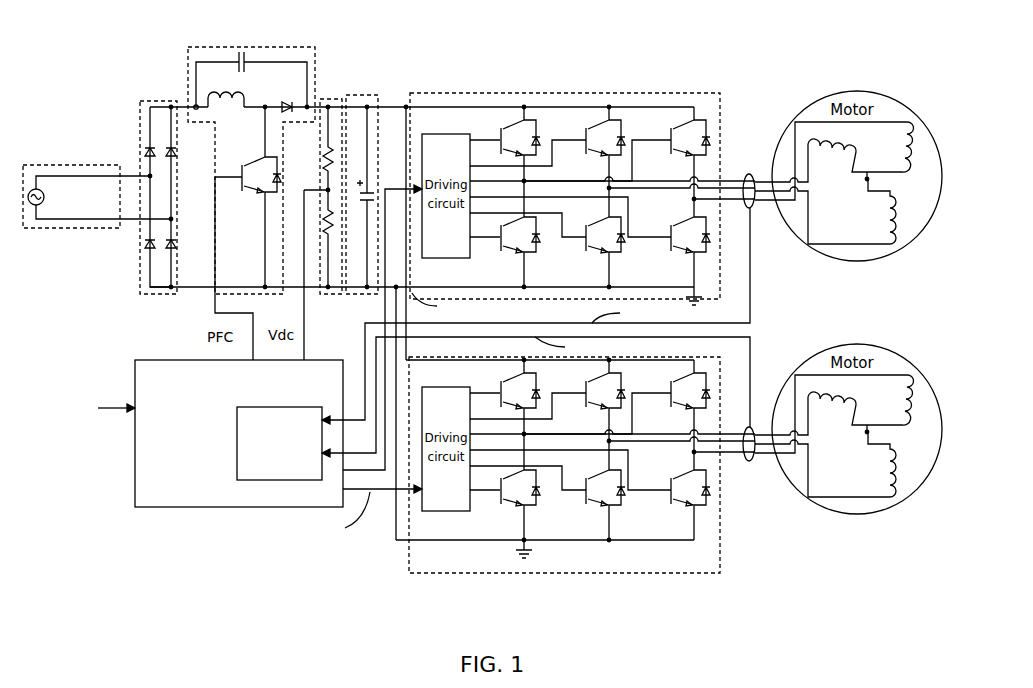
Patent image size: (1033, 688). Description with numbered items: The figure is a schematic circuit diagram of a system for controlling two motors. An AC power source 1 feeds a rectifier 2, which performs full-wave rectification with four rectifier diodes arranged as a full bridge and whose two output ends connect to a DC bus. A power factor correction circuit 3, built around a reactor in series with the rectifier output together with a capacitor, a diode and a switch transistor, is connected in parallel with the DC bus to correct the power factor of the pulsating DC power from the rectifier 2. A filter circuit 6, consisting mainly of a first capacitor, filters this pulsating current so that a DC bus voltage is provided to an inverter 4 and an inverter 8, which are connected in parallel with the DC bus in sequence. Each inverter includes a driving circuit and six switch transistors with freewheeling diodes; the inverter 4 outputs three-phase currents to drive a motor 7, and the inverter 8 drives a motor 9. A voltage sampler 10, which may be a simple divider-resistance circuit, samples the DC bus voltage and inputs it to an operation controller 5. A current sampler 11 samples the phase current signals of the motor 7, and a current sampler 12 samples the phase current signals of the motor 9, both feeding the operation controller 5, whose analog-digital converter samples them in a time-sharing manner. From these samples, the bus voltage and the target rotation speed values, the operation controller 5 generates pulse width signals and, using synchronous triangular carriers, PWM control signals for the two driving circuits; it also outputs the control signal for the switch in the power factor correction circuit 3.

The AC power source 1 is at (92, 165).
The rectifier 2 is at (163, 100).
The power factor correction (PFC) circuit 3 is at (240, 47).
The inverter 4 is at (547, 93).
The operation controller 5 is at (195, 360).
The filter circuit 6 is at (375, 96).
The motor 7 is at (852, 91).
The inverter 8 is at (720, 533).
The motor 9 is at (852, 345).
The voltage sampler 10 is at (343, 294).
The current sampler 11 is at (750, 290).
The current sampler 12 is at (750, 347).